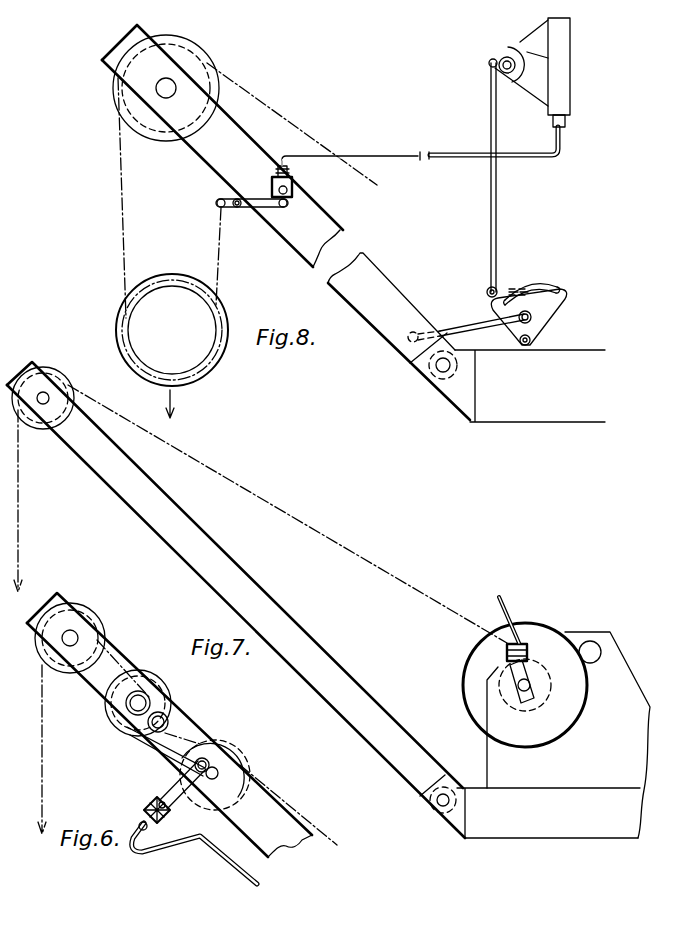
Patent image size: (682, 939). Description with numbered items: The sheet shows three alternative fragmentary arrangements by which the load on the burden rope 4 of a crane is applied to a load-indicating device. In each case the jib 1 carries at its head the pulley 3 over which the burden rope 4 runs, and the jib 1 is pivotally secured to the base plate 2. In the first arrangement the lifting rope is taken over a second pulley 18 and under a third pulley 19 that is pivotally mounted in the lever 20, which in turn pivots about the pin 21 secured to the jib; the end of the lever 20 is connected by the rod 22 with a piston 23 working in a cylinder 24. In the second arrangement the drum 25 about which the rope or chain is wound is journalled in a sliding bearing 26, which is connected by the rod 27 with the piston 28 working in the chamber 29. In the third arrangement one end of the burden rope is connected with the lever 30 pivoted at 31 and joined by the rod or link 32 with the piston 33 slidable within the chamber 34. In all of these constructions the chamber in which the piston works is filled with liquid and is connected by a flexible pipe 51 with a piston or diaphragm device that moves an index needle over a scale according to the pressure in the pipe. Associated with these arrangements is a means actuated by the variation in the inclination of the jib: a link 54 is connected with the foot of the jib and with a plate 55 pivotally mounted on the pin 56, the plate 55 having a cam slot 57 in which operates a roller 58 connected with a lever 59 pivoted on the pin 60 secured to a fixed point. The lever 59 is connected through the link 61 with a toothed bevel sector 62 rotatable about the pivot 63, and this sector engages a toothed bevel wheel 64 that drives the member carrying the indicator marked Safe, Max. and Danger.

In FIG. 8, the jib 1 is at (378, 297).
In FIG. 7, the jib 1 is at (272, 625).
In FIG. 6, the jib 1 is at (97, 682).
In FIG. 8, the base plate 2 is at (528, 408).
In FIG. 7, the base plate 2 is at (627, 805).
In FIG. 8, the pulley 3 is at (188, 67).
In FIG. 7, the pulley 3 is at (60, 383).
In FIG. 6, the pulley 3 is at (88, 620).
In FIG. 8, the burden rope 4 is at (287, 122).
In FIG. 7, the burden rope 4 is at (283, 516).
In FIG. 6, the burden rope 4 is at (108, 670).
In FIG. 6, the second pulley 18 is at (215, 750).
In FIG. 6, the third pulley 19 is at (140, 735).
In FIG. 6, the lever 20 is at (152, 702).
In FIG. 6, the pin 21 is at (169, 722).
In FIG. 6, the rod 22 is at (158, 790).
In FIG. 6, the piston 23 is at (163, 748).
In FIG. 6, the cylinder 24 is at (144, 810).
In FIG. 7, the drum 25 is at (562, 640).
In FIG. 7, the sliding bearing 26 is at (537, 674).
In FIG. 7, the rod 27 is at (511, 672).
In FIG. 7, the piston 28 is at (526, 645).
In FIG. 7, the chamber 29 is at (515, 642).
In FIG. 8, the lever 30 is at (222, 207).
In FIG. 8, the pivot 31 is at (238, 199).
In FIG. 8, the rod or link 32 is at (292, 192).
In FIG. 8, the piston 33 is at (292, 182).
In FIG. 8, the chamber 34 is at (278, 174).
In FIG. 8, the flexible pipe 51 is at (436, 158).
In FIG. 8, the link 54 is at (474, 331).
In FIG. 8, the plate 55 is at (546, 314).
In FIG. 8, the pin 56 is at (527, 346).
In FIG. 8, the cam slot 57 is at (558, 290).
In FIG. 8, the roller 58 is at (532, 300).
In FIG. 8, the lever 59 is at (497, 288).
In FIG. 8, the pin 60 is at (513, 290).
In FIG. 8, the link 61 is at (496, 214).
In FIG. 8, the toothed bevel sector 62 is at (518, 85).
In FIG. 8, the pivot 63 is at (503, 61).
In FIG. 8, the toothed bevel wheel 64 is at (528, 58).